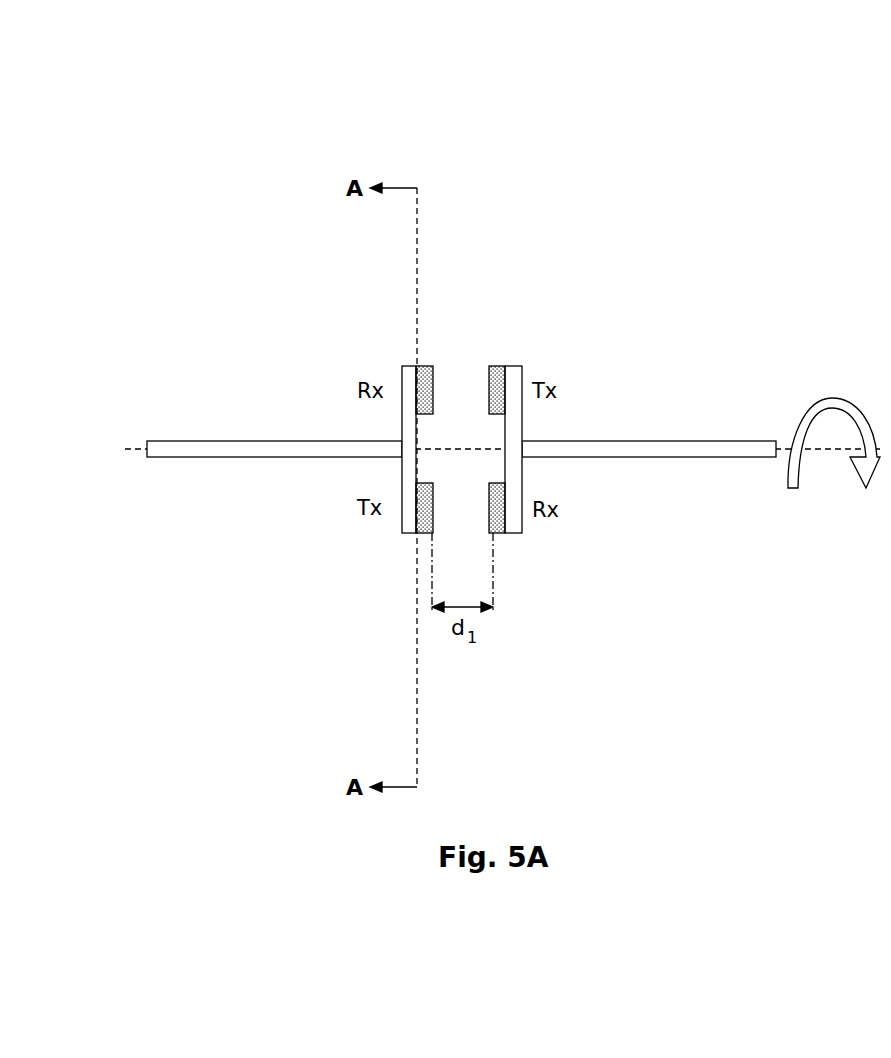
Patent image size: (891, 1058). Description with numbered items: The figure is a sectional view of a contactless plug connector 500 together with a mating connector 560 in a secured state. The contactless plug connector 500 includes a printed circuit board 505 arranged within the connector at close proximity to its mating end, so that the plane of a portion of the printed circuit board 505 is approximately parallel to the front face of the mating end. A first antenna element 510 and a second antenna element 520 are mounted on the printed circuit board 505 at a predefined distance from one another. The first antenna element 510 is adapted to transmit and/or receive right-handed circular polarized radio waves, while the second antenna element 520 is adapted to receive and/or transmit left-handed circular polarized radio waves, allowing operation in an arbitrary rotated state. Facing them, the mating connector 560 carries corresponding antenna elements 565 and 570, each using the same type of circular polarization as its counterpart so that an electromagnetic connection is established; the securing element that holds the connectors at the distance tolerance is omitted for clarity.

The contactless plug connector 500 is at (305, 436).
The printed circuit board 505 is at (402, 463).
The first antenna element 510 is at (428, 393).
The second antenna element 520 is at (428, 510).
The mating connector 560 is at (725, 436).
The antenna element of the mating connector 565 is at (497, 535).
The antenna element of the mating connector 570 is at (497, 368).